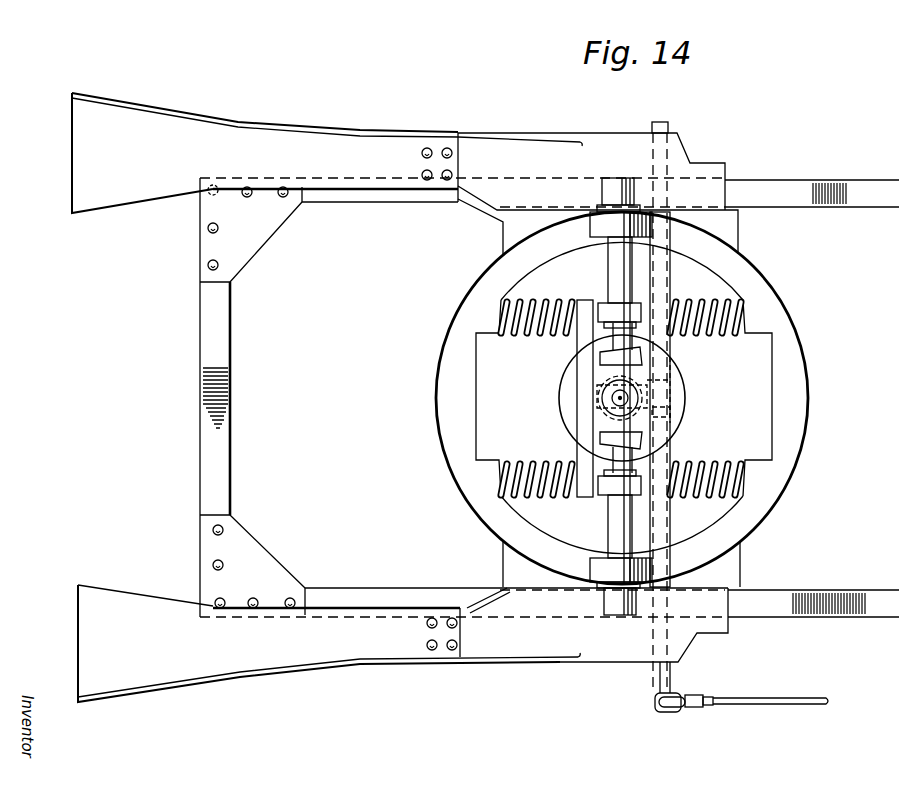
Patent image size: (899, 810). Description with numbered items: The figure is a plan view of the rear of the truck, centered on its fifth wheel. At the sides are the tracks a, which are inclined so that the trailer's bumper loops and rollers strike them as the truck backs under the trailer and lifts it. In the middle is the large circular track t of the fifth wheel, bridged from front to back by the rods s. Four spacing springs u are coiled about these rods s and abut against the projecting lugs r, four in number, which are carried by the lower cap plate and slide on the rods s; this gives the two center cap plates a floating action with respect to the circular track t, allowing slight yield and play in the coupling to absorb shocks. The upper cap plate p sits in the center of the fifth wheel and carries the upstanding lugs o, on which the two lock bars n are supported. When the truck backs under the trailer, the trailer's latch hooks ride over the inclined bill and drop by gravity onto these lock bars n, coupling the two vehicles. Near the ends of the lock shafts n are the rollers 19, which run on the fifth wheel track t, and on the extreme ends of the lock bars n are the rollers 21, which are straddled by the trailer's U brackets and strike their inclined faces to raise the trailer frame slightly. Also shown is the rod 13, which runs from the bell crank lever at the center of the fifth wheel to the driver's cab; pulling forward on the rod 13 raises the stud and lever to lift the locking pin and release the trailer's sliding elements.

The tracks a is at (172, 130).
The circular track t is at (760, 288).
The spacing springs u is at (520, 454).
The rods s is at (523, 334).
The projecting lugs r is at (678, 293).
The lock bars n is at (613, 265).
The cap plate p is at (688, 398).
The upstanding lugs o is at (655, 358).
The rollers 19 is at (590, 215).
The rollers 21 is at (603, 188).
The rod 13 is at (788, 703).